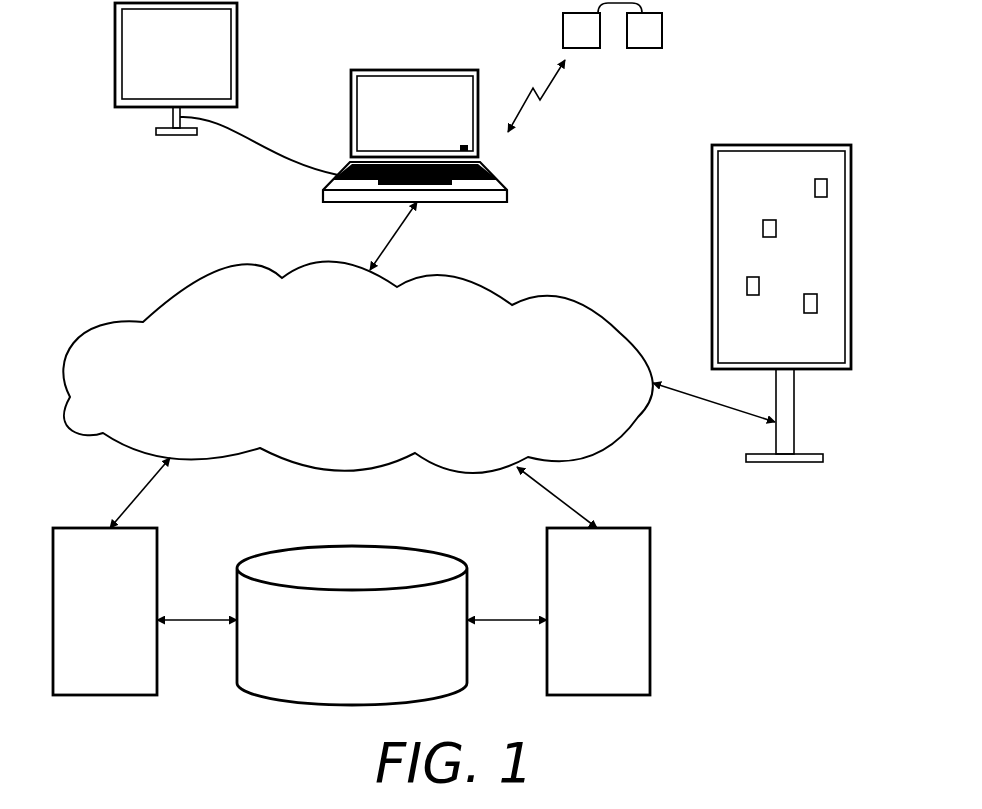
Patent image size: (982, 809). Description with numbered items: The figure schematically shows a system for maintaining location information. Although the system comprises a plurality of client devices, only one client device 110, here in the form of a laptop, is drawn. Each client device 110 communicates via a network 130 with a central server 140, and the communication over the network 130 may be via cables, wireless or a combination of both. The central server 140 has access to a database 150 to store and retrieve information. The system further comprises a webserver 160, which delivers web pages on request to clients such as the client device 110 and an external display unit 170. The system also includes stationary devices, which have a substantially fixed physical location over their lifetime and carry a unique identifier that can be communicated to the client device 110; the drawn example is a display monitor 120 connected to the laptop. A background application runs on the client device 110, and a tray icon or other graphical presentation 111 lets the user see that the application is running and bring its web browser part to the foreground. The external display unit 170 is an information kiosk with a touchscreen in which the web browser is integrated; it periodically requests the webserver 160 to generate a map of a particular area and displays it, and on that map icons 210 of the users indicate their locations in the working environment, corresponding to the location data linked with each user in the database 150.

The client device 110 is at (440, 70).
The tray icon 111 is at (462, 146).
The display monitor 120 is at (237, 22).
The network 130 is at (224, 268).
The central server 140 is at (157, 545).
The database 150 is at (347, 543).
The webserver 160 is at (613, 528).
The external display unit 170 is at (712, 232).
The icons 210 is at (815, 188).